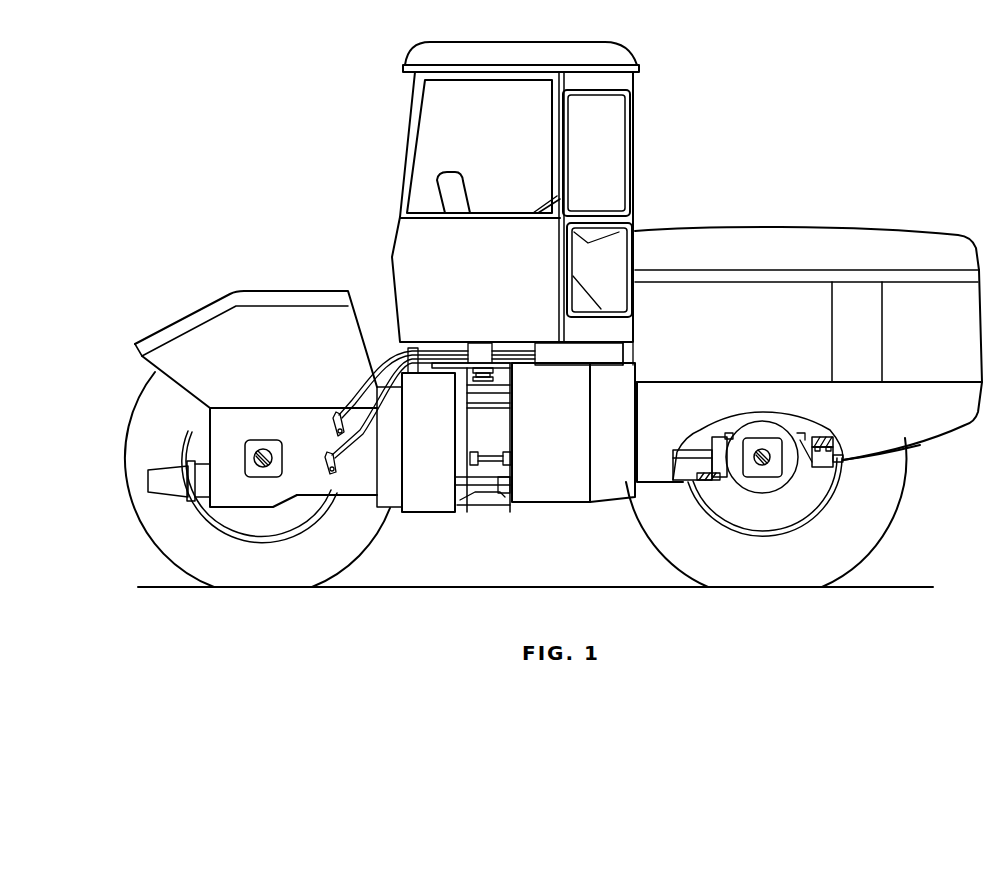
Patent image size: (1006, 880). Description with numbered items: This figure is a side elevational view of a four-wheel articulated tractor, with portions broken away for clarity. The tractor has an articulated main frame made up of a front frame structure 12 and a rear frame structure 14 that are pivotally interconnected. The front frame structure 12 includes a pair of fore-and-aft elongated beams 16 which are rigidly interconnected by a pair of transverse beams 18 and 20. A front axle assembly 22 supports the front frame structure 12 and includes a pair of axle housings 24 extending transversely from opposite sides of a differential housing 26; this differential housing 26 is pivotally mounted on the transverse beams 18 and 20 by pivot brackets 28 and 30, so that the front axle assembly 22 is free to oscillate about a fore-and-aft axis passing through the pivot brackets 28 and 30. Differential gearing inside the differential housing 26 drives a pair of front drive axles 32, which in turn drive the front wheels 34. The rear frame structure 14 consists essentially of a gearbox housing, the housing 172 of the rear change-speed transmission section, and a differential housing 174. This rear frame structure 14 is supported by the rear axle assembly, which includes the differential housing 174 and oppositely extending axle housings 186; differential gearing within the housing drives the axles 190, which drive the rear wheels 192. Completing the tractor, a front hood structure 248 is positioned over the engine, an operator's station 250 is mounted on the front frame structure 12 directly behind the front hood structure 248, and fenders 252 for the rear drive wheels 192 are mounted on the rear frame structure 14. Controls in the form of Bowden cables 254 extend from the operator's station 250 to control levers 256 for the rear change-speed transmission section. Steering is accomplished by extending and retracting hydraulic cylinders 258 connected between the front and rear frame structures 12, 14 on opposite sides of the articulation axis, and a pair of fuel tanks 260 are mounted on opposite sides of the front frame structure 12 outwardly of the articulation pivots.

The front frame structure 12 is at (920, 444).
The rear frame structure 14 is at (353, 507).
The fore-and-aft elongated beams 16 is at (972, 421).
The transverse beam 18 is at (823, 436).
The transverse beam 20 is at (702, 482).
The front axle assembly 22 is at (744, 491).
The axle housings 24 is at (774, 470).
The differential housing 26 is at (762, 493).
The pivot bracket 28 is at (836, 456).
The pivot bracket 30 is at (710, 440).
The front drive axles 32 is at (762, 449).
The front wheels 34 is at (882, 517).
The housing of rear change-speed transmission section 172 is at (322, 412).
The differential housing 174 is at (240, 412).
The axle housings 186 is at (273, 443).
The axles 190 is at (272, 463).
The rear wheels 192 is at (152, 535).
The front hood structure 248 is at (842, 234).
The operator's station 250 is at (612, 184).
The fenders 252 is at (270, 293).
The Bowden cables 254 is at (380, 362).
The control levers 256 is at (335, 466).
The hydraulic cylinders 258 is at (509, 484).
The fuel tanks 260 is at (573, 497).